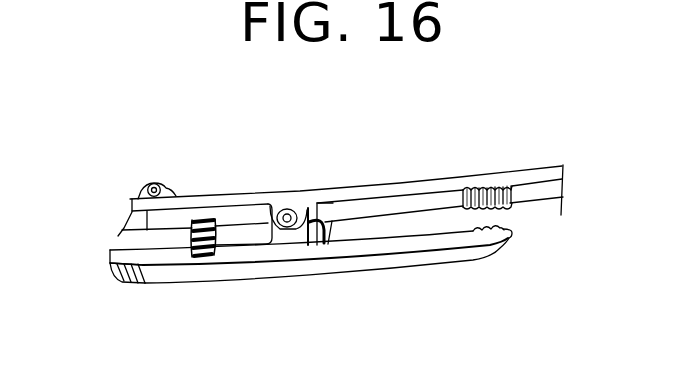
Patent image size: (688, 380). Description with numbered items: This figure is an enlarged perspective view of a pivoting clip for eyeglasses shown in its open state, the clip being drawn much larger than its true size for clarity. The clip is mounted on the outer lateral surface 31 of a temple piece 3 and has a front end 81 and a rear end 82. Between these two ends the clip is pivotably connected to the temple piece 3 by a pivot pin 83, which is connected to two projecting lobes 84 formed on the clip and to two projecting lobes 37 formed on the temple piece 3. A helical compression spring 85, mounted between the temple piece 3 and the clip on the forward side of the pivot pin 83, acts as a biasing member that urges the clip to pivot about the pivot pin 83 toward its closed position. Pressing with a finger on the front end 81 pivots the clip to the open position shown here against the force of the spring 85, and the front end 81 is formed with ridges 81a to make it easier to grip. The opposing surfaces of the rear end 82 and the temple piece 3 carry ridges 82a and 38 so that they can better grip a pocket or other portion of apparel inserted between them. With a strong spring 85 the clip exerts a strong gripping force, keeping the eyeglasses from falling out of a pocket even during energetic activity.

The temple piece 3 is at (398, 182).
The outer lateral surface 31 is at (542, 192).
The ridges 38 is at (483, 187).
The projecting lobes 37 is at (286, 208).
The helical compression spring 85 is at (196, 244).
The projecting lobes 84 is at (273, 236).
The pivot pin 83 is at (313, 240).
The rear end 82 is at (487, 257).
The ridges 82a is at (503, 227).
The front end 81 is at (110, 262).
The ridges 81a is at (128, 284).